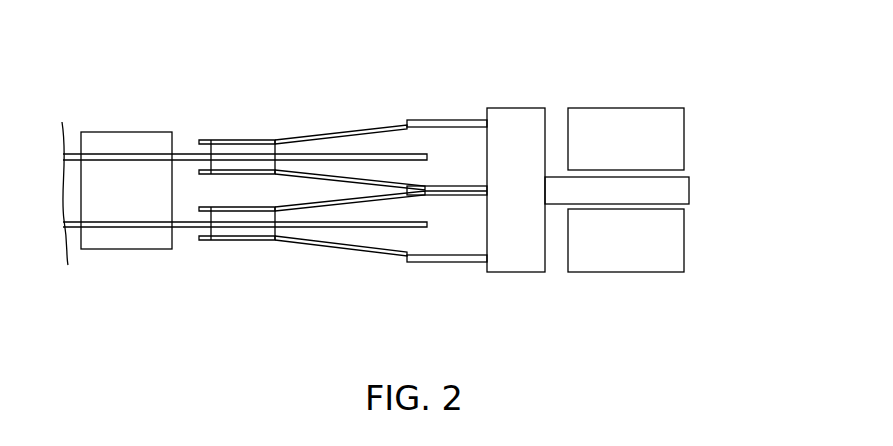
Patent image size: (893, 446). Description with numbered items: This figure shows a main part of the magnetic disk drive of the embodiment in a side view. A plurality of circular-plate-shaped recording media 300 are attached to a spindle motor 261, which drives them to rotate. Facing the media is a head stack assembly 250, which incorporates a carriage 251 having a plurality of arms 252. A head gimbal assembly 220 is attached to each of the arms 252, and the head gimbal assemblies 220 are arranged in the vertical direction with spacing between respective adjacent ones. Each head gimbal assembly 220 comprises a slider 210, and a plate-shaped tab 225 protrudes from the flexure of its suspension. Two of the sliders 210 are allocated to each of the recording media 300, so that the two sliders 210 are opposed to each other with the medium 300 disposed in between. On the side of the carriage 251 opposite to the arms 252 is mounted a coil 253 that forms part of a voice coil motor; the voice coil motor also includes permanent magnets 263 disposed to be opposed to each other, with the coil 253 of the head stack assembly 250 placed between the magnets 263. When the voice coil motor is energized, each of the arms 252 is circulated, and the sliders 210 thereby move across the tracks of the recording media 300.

The slider 210 is at (211, 149).
The head gimbal assembly 220 is at (332, 133).
The tab 225 is at (202, 241).
The head stack assembly 250 is at (584, 185).
The carriage 251 is at (498, 107).
The arm 252 is at (423, 120).
The coil 253 is at (678, 193).
The spindle motor 261 is at (105, 138).
The permanent magnet 263 is at (620, 108).
The recording medium 300 is at (185, 153).